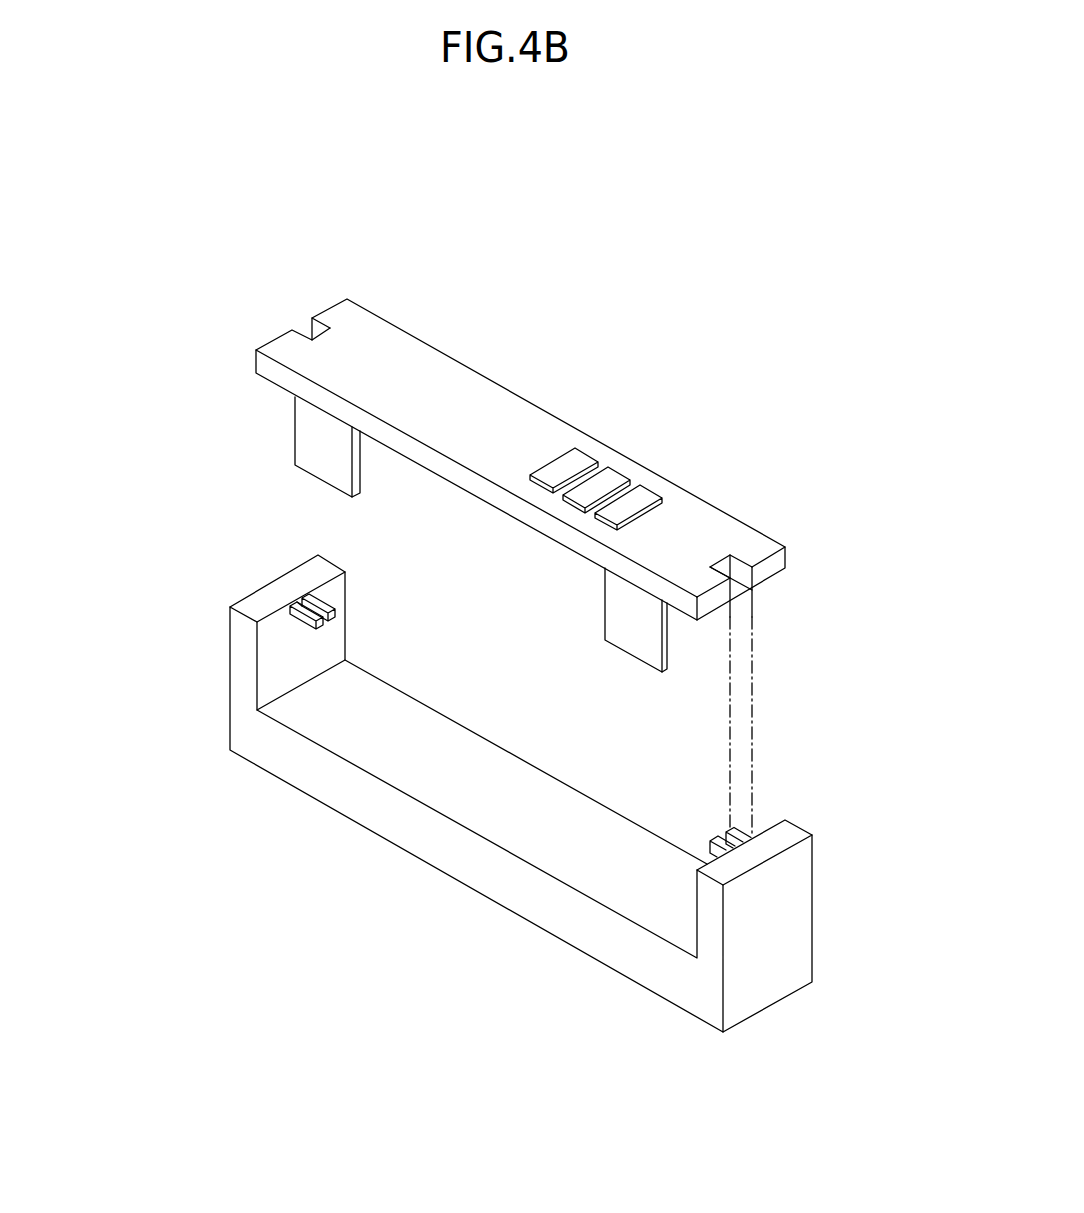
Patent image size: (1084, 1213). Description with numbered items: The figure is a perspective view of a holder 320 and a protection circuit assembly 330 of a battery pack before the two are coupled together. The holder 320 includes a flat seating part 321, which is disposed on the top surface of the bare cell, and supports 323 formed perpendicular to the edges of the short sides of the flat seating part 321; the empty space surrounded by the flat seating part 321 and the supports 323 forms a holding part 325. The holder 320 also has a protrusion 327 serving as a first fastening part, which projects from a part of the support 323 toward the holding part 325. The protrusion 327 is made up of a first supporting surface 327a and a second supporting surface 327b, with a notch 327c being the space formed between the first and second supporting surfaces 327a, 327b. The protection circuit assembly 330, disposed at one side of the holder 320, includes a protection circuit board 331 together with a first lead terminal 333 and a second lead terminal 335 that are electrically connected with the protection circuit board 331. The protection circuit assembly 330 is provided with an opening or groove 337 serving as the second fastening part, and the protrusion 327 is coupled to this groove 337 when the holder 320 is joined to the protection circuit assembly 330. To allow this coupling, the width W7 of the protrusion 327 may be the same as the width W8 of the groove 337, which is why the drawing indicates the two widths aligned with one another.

The holder 320 is at (491, 793).
The flat seating part 321 is at (555, 930).
The support 323 is at (797, 905).
The holding part 325 is at (612, 766).
The protrusion 327 is at (405, 620).
The first supporting surface 327a is at (318, 624).
The second supporting surface 327b is at (325, 603).
The notch 327c is at (330, 612).
The protection circuit assembly 330 is at (519, 539).
The protection circuit board 331 is at (385, 332).
The first lead terminal 333 is at (305, 433).
The second lead terminal 335 is at (632, 644).
The groove 337 is at (738, 570).
The width of the protrusion W7 is at (731, 825).
The width of the groove W8 is at (730, 625).